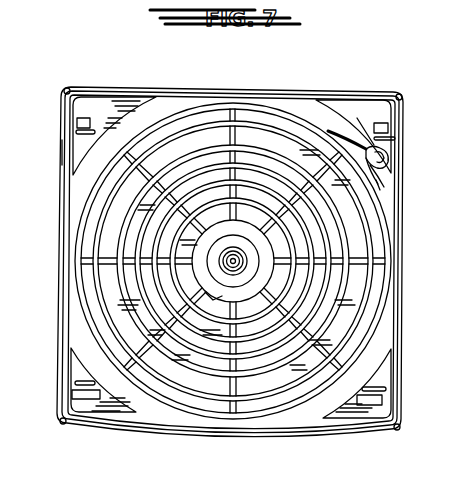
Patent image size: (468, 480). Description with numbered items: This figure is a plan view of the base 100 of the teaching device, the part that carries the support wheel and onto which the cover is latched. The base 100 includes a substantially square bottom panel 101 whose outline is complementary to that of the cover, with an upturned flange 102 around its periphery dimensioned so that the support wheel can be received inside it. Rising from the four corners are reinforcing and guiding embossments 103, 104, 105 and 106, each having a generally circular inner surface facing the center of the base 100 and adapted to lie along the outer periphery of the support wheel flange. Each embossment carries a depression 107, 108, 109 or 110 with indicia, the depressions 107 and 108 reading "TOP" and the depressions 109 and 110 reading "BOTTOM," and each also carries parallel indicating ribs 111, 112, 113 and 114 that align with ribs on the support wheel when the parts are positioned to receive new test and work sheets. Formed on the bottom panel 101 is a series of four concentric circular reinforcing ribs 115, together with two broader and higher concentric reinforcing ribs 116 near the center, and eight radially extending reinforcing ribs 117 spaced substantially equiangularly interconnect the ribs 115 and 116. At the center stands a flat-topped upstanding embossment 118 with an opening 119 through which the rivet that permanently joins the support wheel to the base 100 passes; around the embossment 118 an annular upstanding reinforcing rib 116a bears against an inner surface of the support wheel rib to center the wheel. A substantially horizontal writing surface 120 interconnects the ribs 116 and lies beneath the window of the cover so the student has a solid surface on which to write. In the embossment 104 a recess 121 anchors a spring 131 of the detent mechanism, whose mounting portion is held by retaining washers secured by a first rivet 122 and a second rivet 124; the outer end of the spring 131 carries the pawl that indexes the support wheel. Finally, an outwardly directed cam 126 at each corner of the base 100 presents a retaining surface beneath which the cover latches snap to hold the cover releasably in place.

The base 100 is at (333, 88).
The bottom panel 101 is at (177, 100).
The upturned flange 102 is at (62, 152).
The reinforcing and guiding embossment 103 is at (102, 105).
The reinforcing and guiding embossment 104 is at (370, 112).
The reinforcing and guiding embossment 105 is at (361, 420).
The reinforcing and guiding embossment 106 is at (102, 413).
The depression 107 is at (78, 121).
The depression 108 is at (389, 127).
The depression 109 is at (383, 401).
The depression 110 is at (88, 397).
The indicating rib 111 is at (79, 133).
The indicating rib 112 is at (396, 138).
The indicating rib 113 is at (381, 388).
The indicating rib 114 is at (82, 381).
The circular reinforcing ribs 115 is at (77, 213).
The reinforcing ribs 116 is at (223, 192).
The annular upstanding reinforcing rib 116a is at (233, 262).
The radially extending reinforcing ribs 117 is at (92, 252).
The upstanding embossment 118 is at (233, 262).
The opening 119 is at (223, 192).
The writing surface 120 is at (143, 275).
The recess 121 is at (390, 153).
The first rivet 122 is at (373, 140).
The second rivet 124 is at (385, 170).
The cam 126 is at (64, 89).
The spring 131 is at (393, 190).